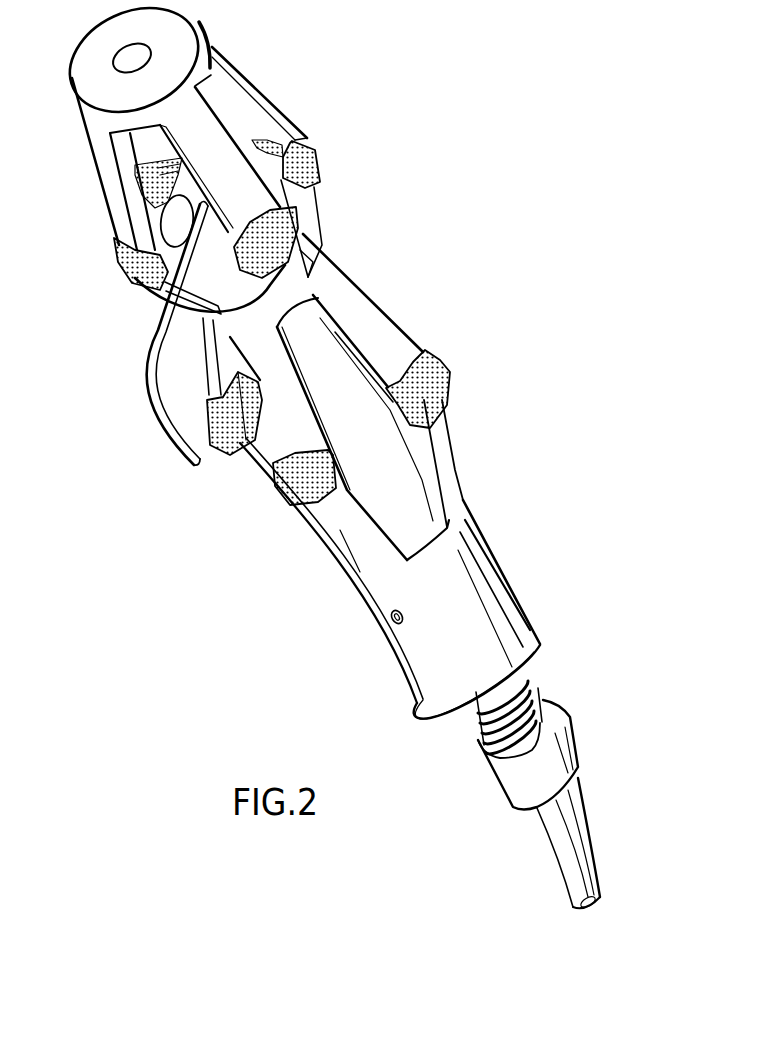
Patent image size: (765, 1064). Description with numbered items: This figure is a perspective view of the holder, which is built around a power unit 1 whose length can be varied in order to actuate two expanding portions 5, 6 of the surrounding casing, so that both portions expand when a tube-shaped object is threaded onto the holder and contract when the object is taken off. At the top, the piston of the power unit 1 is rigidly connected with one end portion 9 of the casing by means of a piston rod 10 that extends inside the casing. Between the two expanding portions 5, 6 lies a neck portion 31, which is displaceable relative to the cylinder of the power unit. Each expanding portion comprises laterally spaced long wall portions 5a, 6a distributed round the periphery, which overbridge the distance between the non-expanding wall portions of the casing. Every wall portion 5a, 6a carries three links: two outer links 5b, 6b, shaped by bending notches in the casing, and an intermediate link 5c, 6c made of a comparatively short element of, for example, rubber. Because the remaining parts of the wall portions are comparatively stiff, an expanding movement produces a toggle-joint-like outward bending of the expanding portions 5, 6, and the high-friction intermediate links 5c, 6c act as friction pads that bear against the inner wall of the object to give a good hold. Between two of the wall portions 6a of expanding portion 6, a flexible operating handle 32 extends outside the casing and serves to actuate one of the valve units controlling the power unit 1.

The power unit 1 is at (173, 246).
The expanding portion 5 is at (288, 522).
The wall portion 5a is at (362, 318).
The outer link 5b is at (327, 275).
The intermediate link 5c is at (287, 500).
The expanding portion 6 is at (140, 300).
The wall portion 6a is at (250, 97).
The outer link 6b is at (100, 128).
The intermediate link 6c is at (130, 277).
The end portion 9 is at (93, 62).
The piston rod 10 is at (168, 146).
The neck portion 31 is at (318, 273).
The flexible operating handle 32 is at (157, 408).